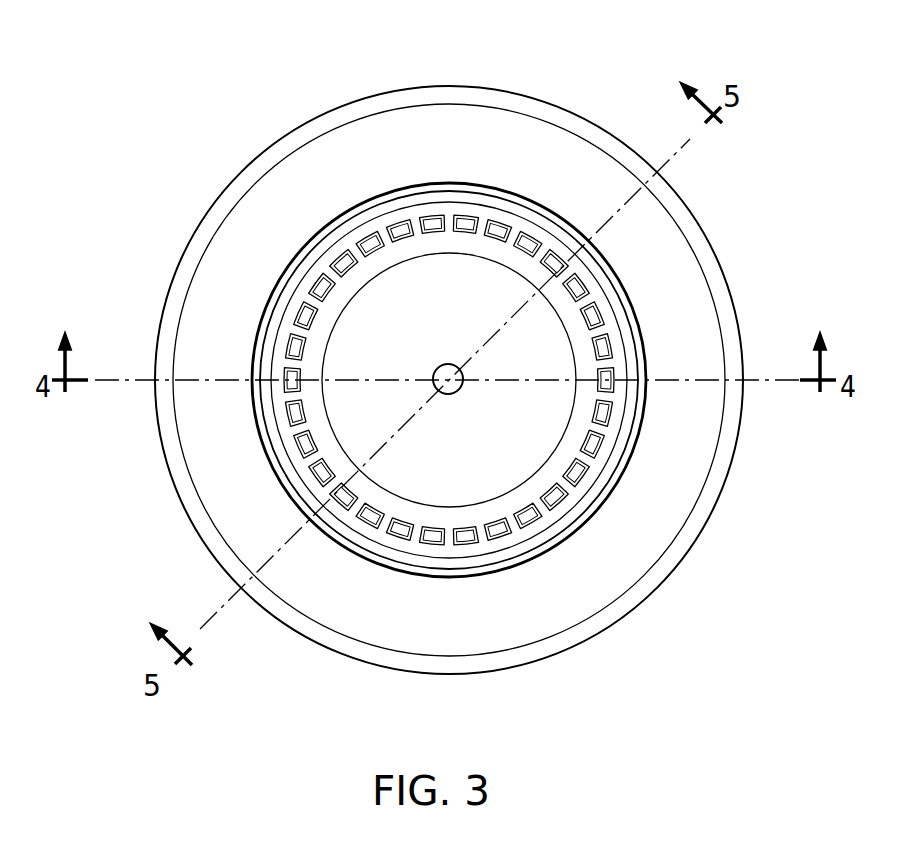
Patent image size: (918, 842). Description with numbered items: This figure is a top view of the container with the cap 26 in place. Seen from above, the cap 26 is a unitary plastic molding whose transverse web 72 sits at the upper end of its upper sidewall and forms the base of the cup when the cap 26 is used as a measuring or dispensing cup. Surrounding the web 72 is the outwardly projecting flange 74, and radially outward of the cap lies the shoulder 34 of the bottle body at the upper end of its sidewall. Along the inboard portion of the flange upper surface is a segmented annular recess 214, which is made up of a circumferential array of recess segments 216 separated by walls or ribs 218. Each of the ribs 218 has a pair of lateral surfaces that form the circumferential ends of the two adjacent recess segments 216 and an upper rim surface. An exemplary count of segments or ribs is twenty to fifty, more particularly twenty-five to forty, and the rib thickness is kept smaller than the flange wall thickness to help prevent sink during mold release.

The cap 26 is at (448, 140).
The shoulder 34 is at (566, 604).
The transverse web 72 is at (530, 439).
The flange 74 is at (408, 566).
The segmented annular recess 214 is at (609, 306).
The recess segments 216 is at (613, 353).
The ribs 218 is at (507, 222).